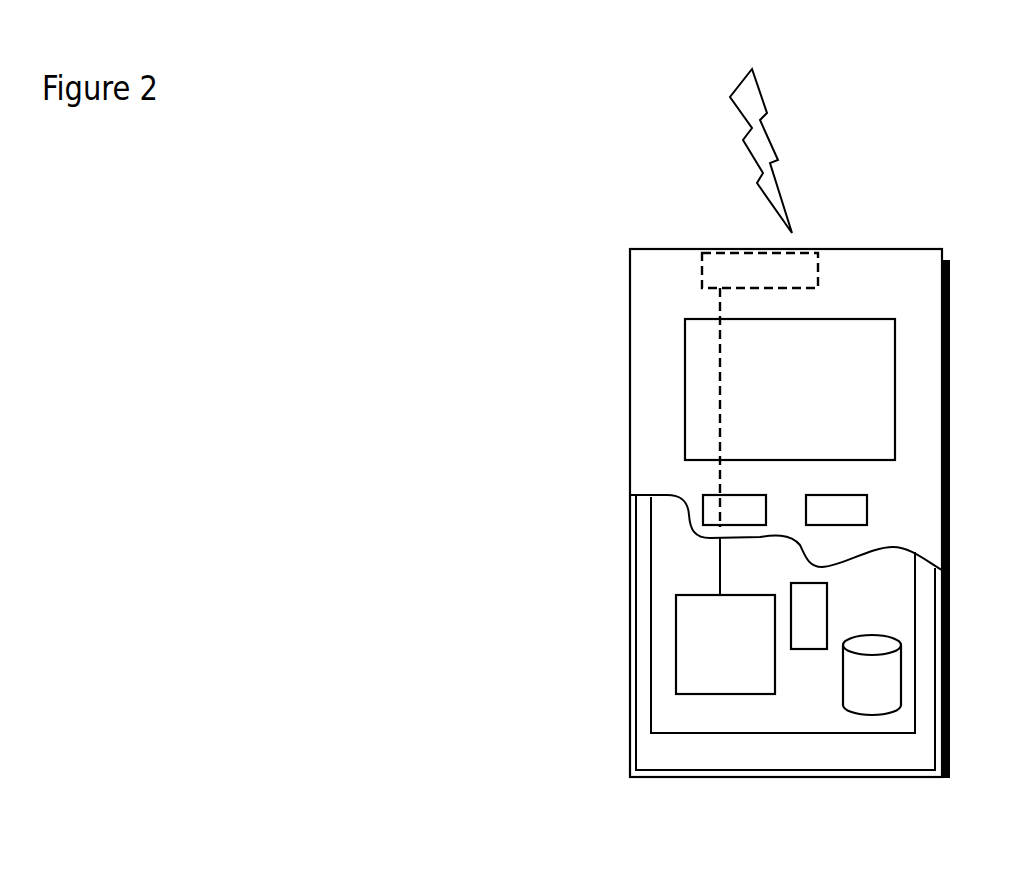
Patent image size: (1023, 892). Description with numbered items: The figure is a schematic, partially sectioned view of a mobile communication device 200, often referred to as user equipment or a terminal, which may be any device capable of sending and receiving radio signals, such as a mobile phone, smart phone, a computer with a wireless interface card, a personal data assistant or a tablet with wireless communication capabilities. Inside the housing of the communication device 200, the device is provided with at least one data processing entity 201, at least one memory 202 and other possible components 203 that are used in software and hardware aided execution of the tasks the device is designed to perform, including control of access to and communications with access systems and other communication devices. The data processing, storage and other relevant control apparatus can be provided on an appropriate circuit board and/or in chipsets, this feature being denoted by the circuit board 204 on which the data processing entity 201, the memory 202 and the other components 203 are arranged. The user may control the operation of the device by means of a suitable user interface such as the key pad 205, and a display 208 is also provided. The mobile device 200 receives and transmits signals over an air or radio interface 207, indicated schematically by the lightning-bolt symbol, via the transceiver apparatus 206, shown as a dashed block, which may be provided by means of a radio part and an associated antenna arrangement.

The communication device 200 is at (630, 293).
The data processing entity 201 is at (683, 628).
The memory 202 is at (865, 687).
The other possible components 203 is at (808, 598).
The circuit board 204 is at (677, 713).
The key pad 205 is at (708, 512).
The transceiver apparatus 206 is at (807, 263).
The air or radio interface 207 is at (792, 180).
The display 208 is at (703, 376).